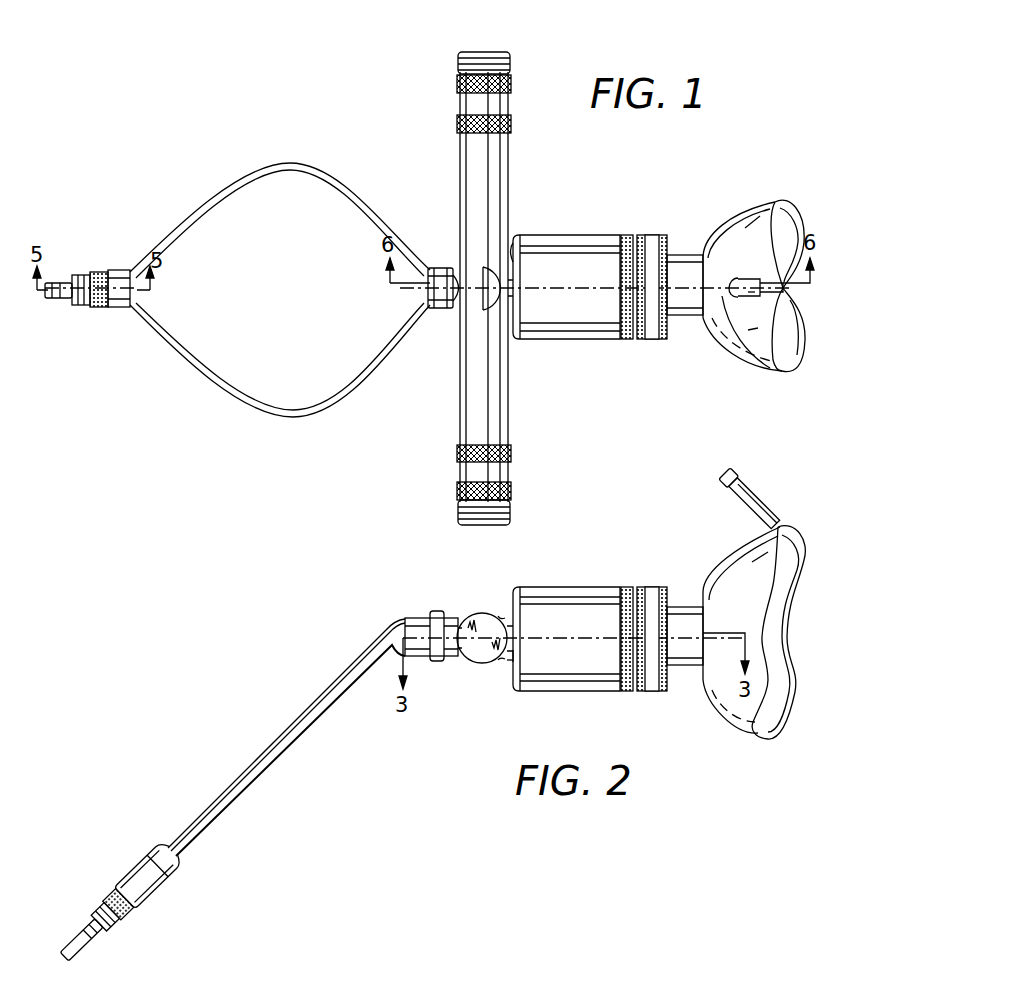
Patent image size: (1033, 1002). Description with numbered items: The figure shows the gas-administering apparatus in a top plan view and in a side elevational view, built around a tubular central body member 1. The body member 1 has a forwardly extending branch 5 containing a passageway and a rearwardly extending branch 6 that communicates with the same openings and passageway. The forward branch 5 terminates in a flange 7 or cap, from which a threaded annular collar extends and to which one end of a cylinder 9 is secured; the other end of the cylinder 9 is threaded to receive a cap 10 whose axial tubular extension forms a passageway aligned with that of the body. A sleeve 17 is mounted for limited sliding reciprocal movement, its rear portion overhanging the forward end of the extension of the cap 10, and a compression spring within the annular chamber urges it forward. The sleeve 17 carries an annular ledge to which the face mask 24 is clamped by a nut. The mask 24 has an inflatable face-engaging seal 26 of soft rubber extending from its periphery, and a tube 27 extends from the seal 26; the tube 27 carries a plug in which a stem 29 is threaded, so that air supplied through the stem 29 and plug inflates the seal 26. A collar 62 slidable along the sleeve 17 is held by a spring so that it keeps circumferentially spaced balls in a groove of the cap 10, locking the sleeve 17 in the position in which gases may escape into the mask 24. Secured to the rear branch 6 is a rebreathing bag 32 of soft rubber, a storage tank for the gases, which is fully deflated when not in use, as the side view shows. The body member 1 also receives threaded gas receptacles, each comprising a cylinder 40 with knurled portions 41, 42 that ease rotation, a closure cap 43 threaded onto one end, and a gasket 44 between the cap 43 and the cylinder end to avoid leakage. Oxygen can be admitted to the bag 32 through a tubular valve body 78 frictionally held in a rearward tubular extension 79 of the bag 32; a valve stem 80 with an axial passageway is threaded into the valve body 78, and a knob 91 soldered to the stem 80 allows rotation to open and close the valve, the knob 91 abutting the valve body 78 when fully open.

In FIG. 1, the central body member 1 is at (493, 287).
In FIG. 2, the central body member 1 is at (495, 665).
In FIG. 1, the forwardly extending branch 5 is at (517, 240).
In FIG. 2, the forwardly extending branch 5 is at (507, 615).
In FIG. 1, the rearwardly extending branch 6 is at (455, 272).
In FIG. 2, the rearwardly extending branch 6 is at (450, 616).
In FIG. 1, the flange 7 is at (514, 338).
In FIG. 2, the flange 7 is at (507, 690).
In FIG. 1, the cylinder 9 is at (565, 235).
In FIG. 2, the cylinder 9 is at (562, 586).
In FIG. 1, the cap 10 is at (627, 234).
In FIG. 2, the cap 10 is at (627, 586).
In FIG. 1, the sleeve 17 is at (683, 254).
In FIG. 2, the sleeve 17 is at (682, 606).
In FIG. 1, the face mask 24 is at (742, 213).
In FIG. 2, the face mask 24 is at (730, 566).
In FIG. 1, the inflatable face-engaging seal 26 is at (790, 205).
In FIG. 2, the inflatable face-engaging seal 26 is at (780, 630).
In FIG. 1, the tube 27 is at (781, 290).
In FIG. 2, the tube 27 is at (728, 480).
In FIG. 1, the stem 29 is at (731, 293).
In FIG. 2, the stem 29 is at (729, 478).
In FIG. 1, the rebreathing bag 32 is at (243, 408).
In FIG. 2, the rebreathing bag 32 is at (272, 738).
In FIG. 1, the cylinder 40 is at (509, 182).
In FIG. 2, the cylinder 40 is at (470, 662).
In FIG. 1, the knurled portion 41 is at (511, 125).
In FIG. 1, the knurled portion 42 is at (511, 87).
In FIG. 1, the closure cap 43 is at (478, 56).
In FIG. 2, the closure cap 43 is at (482, 626).
In FIG. 1, the gasket 44 is at (510, 65).
In FIG. 1, the collar 62 is at (652, 234).
In FIG. 2, the collar 62 is at (652, 586).
In FIG. 1, the tubular valve body 78 is at (98, 272).
In FIG. 2, the tubular valve body 78 is at (118, 904).
In FIG. 1, the rearward tubular extension 79 is at (120, 310).
In FIG. 2, the rearward tubular extension 79 is at (149, 874).
In FIG. 1, the valve stem 80 is at (58, 298).
In FIG. 2, the valve stem 80 is at (81, 940).
In FIG. 1, the knob 91 is at (78, 306).
In FIG. 2, the knob 91 is at (105, 917).